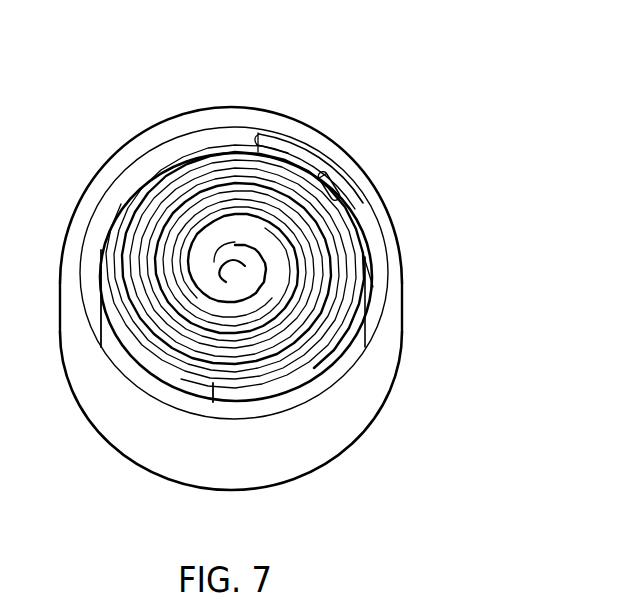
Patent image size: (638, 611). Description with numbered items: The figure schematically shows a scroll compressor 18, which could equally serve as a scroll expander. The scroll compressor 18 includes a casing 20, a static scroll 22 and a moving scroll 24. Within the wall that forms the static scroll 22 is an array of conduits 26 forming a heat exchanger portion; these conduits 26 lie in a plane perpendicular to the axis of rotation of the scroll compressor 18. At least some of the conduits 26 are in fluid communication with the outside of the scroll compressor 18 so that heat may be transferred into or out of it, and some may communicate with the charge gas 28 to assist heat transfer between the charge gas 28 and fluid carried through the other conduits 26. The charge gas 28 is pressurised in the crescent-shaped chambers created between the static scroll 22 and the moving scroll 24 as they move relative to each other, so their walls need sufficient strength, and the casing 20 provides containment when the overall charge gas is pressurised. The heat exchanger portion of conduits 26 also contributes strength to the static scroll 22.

The scroll compressor 18 is at (447, 221).
The casing 20 is at (402, 290).
The static scroll 22 is at (305, 152).
The moving scroll 24 is at (219, 153).
The conduits 26 is at (338, 190).
The charge gas 28 is at (160, 157).